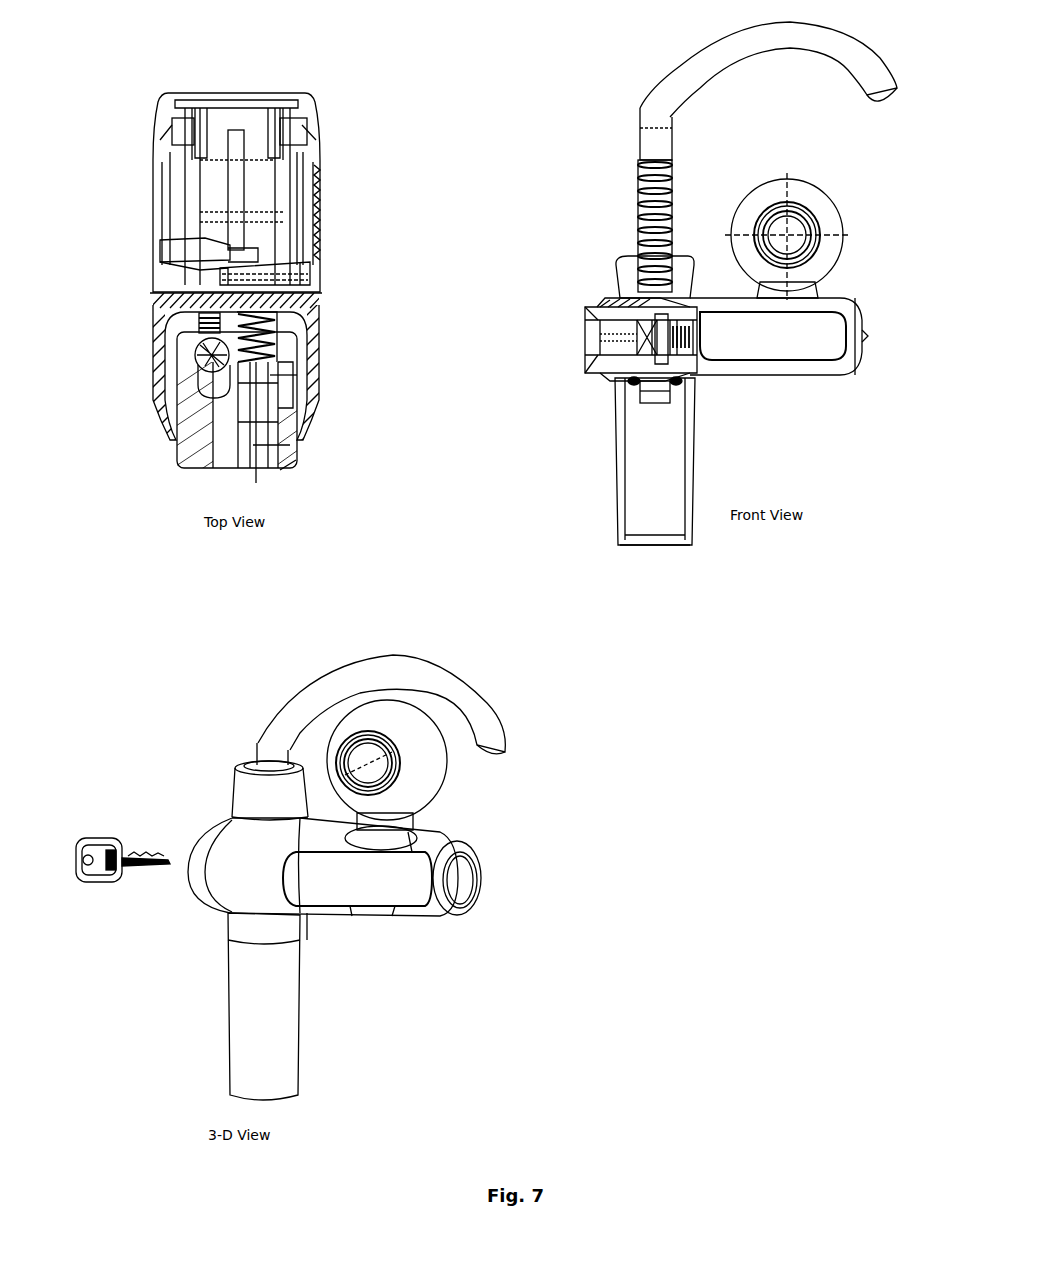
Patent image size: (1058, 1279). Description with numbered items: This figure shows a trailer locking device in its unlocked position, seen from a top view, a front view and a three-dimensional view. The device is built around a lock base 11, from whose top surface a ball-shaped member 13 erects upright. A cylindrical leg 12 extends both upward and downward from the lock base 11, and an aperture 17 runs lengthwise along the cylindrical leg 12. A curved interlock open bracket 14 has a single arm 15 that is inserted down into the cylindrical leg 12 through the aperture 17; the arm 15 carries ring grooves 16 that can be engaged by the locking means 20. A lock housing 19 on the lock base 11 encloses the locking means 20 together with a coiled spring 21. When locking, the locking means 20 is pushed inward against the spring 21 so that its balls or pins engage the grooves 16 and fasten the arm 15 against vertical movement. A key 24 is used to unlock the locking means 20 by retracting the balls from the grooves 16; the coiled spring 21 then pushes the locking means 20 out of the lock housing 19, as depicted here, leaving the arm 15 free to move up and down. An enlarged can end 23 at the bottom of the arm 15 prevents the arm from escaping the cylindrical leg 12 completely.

The lock base 11 is at (332, 175).
The cylindrical leg 12 is at (700, 468).
The ball-shaped member 13 is at (848, 236).
The curved interlock open bracket 14 is at (797, 60).
The arm 15 is at (637, 116).
The ring grooves 16 is at (636, 191).
The aperture 17 is at (640, 458).
The lock housing 19 is at (205, 432).
The locking means 20 is at (278, 466).
The spring 21 is at (282, 340).
The enlarged can end 23 is at (630, 384).
The key 24 is at (145, 880).